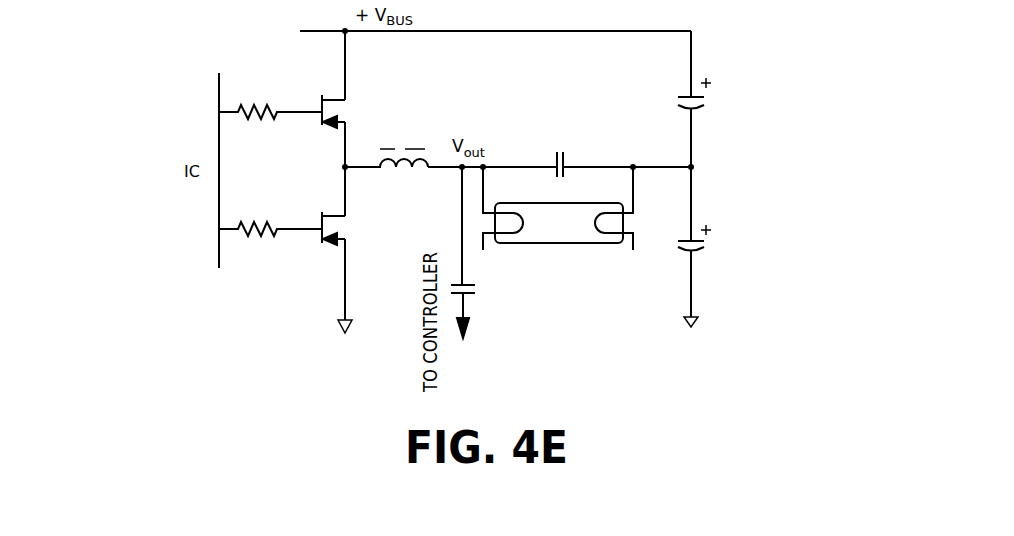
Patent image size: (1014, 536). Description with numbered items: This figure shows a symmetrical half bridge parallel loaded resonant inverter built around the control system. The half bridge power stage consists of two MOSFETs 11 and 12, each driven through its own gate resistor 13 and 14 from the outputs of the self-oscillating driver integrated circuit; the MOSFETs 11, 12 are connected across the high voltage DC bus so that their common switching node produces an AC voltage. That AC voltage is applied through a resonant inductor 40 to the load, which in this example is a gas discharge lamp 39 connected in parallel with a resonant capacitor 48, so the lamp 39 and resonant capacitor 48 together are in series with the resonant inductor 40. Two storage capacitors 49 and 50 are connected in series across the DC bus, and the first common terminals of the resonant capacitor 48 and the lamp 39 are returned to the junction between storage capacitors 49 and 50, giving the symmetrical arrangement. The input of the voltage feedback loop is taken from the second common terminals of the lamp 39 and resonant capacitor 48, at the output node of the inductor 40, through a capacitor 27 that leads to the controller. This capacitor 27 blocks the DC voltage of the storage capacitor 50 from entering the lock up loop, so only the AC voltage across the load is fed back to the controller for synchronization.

The MOSFET 11 is at (336, 110).
The MOSFET 12 is at (346, 228).
The gate resistor 13 is at (246, 100).
The gate resistor 14 is at (253, 218).
The capacitor 27 is at (475, 284).
The gas discharge lamp 39 is at (554, 244).
The resonant inductor 40 is at (406, 148).
The resonant capacitor 48 is at (565, 156).
The storage capacitor 49 is at (708, 100).
The storage capacitor 50 is at (708, 246).